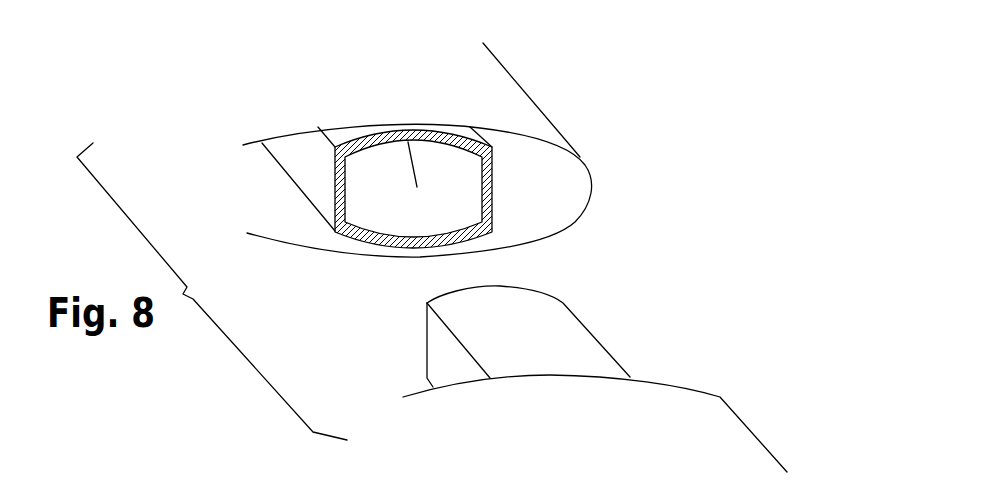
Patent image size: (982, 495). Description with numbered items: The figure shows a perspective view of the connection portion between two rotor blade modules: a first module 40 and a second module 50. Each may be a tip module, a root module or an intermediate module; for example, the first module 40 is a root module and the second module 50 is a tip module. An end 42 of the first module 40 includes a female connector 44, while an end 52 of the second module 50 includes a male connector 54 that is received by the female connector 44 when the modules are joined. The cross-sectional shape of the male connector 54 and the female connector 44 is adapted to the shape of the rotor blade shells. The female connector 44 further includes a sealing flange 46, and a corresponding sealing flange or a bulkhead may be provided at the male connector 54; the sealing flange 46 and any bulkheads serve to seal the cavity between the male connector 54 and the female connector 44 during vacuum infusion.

The first module 40 is at (367, 89).
The end of the first module 42 is at (590, 119).
The female connector 44 is at (417, 187).
The sealing flange 46 is at (335, 191).
The second module 50 is at (607, 456).
The end of the second module 52 is at (712, 366).
The male connector 54 is at (438, 350).